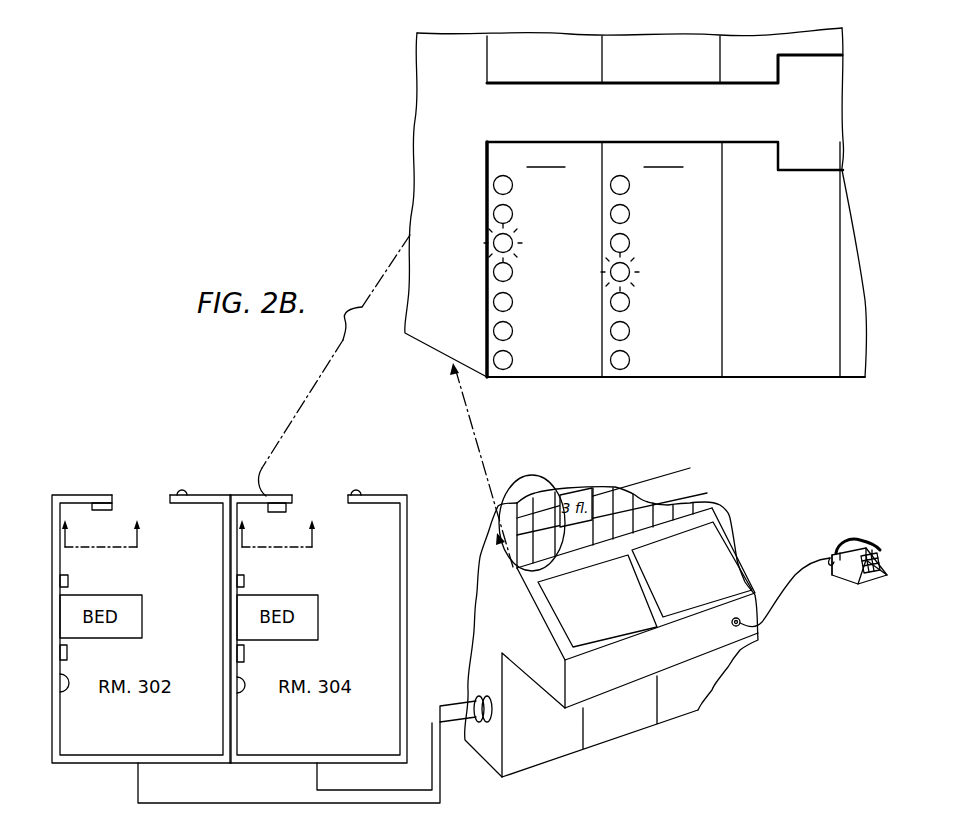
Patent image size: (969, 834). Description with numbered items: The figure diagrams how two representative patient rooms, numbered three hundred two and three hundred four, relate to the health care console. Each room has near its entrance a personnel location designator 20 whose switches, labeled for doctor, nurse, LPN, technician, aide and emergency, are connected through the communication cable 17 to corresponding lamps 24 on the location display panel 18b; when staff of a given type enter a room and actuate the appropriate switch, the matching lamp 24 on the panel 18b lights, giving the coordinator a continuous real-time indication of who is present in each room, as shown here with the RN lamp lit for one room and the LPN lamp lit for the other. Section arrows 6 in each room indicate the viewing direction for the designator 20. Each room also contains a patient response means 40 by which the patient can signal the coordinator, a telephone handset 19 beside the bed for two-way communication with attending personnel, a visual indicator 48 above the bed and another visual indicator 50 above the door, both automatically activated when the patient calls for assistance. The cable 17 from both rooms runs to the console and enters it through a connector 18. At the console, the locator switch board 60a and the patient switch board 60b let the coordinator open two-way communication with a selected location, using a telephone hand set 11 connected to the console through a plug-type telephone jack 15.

The location display panel 18b is at (500, 118).
The indicator lamp 24 is at (493, 183).
The personnel location designator 20 is at (112, 507).
The visual indicator 50 is at (185, 491).
The section arrow 6 is at (195, 533).
The patient response means 40 is at (68, 582).
The telephone handset 19 is at (68, 653).
The visual indicator 48 is at (62, 694).
The communication cable 17 is at (444, 702).
The connector 18 is at (485, 687).
The locator switch board 60a is at (627, 630).
The patient switch board 60b is at (679, 610).
The telephone jack 15 is at (738, 634).
The telephone hand set 11 is at (876, 521).